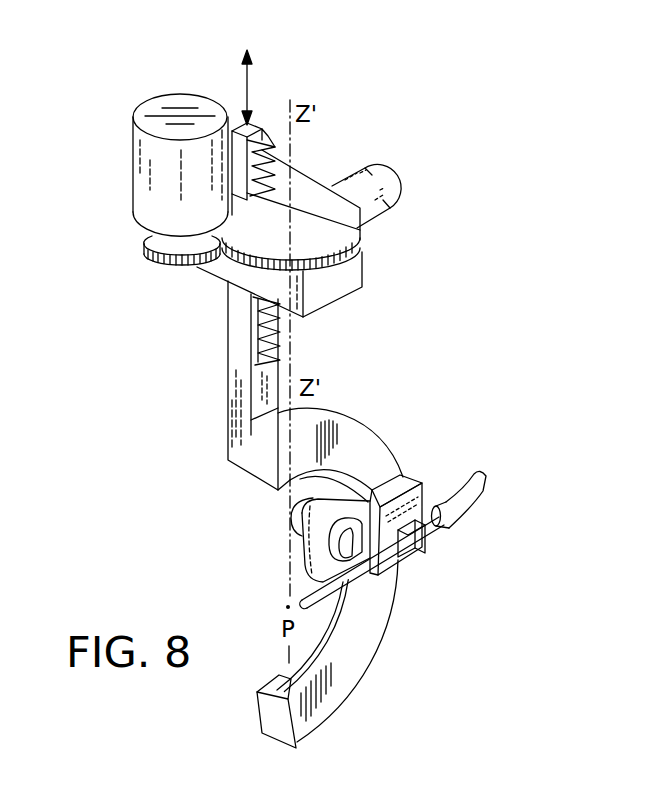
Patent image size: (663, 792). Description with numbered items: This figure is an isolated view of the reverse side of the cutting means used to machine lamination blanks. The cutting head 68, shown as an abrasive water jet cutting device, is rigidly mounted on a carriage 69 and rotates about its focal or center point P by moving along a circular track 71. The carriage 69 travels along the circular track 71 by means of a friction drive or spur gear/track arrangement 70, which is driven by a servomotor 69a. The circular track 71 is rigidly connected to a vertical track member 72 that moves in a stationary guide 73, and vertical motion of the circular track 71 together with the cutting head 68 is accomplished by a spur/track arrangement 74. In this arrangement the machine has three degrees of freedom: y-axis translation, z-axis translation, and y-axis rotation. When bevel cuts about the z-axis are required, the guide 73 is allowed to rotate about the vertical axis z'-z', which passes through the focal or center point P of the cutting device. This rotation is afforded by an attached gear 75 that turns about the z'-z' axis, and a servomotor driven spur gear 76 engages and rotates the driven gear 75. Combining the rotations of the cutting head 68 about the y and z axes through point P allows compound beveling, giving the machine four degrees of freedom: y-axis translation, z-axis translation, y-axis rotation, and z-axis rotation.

The cutting head 68 is at (414, 564).
The carriage 69 is at (405, 477).
The servomotor 69a is at (291, 521).
The friction drive or spur gear/track arrangement 70 is at (330, 562).
The circular track 71 is at (378, 652).
The vertical track member 72 is at (228, 348).
The stationary guide 73 is at (328, 303).
The spur/track arrangement 74 is at (385, 175).
The gear 75 is at (328, 253).
The servomotor driven spur gear 76 is at (144, 245).